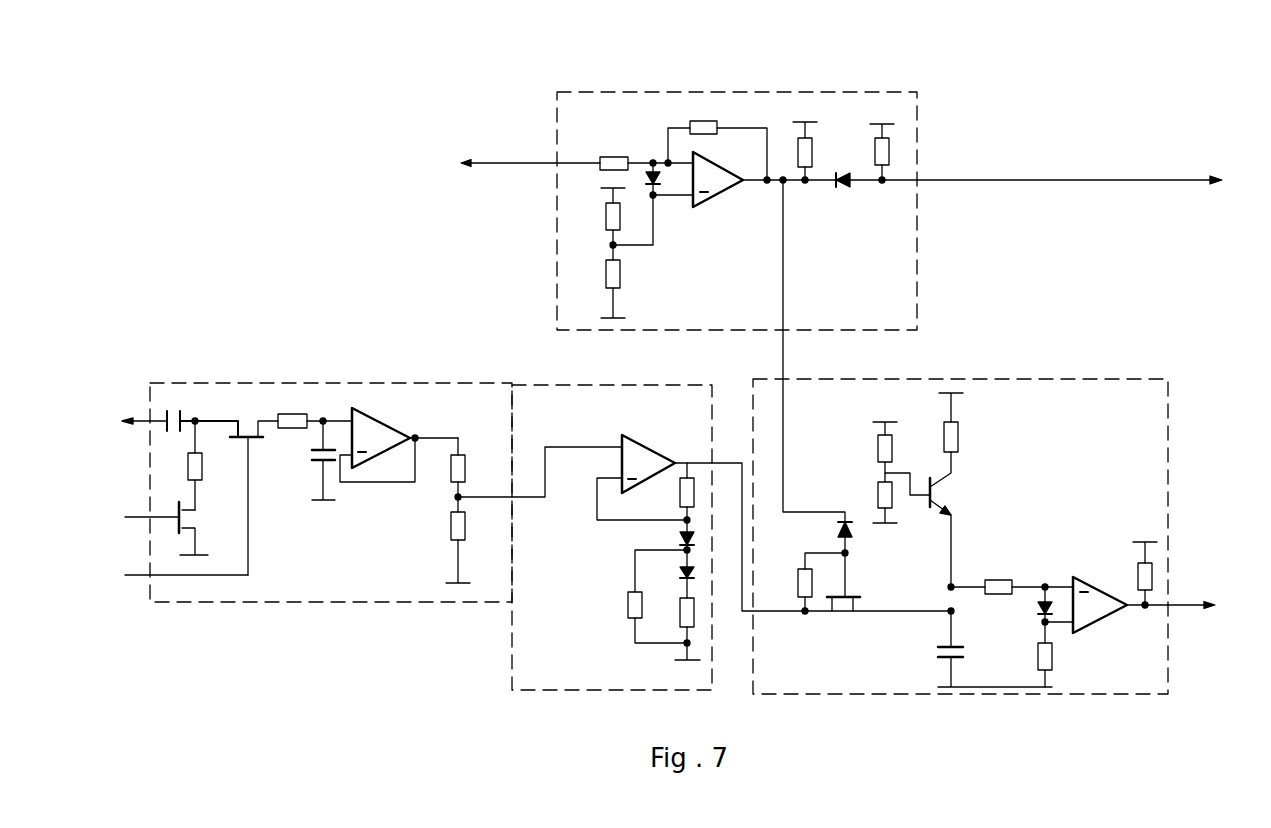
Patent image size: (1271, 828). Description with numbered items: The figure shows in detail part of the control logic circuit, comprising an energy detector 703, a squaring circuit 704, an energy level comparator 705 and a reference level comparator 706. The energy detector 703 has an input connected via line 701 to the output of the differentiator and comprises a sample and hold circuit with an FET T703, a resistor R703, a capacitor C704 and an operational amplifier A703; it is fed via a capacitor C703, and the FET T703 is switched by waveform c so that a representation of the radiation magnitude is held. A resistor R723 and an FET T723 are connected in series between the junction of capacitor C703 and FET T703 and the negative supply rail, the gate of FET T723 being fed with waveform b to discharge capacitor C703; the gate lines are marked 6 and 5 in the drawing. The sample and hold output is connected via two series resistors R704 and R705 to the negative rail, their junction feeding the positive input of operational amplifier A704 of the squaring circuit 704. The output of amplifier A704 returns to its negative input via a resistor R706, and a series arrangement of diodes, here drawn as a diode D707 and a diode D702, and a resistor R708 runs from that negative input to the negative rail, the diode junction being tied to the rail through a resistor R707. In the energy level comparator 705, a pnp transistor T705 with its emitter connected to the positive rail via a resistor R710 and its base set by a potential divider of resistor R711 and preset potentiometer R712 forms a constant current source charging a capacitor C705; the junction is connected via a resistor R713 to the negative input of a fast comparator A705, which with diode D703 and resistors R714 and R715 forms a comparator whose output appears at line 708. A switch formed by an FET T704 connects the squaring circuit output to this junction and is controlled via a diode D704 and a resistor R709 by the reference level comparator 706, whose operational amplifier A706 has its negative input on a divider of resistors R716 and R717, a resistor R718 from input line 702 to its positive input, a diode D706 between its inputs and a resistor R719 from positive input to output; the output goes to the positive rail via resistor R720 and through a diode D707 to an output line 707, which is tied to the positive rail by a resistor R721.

The line 701 is at (124, 419).
The input line 702 is at (510, 163).
The energy detector 703 is at (323, 382).
The squaring circuit 704 is at (578, 384).
The energy level comparator 705 is at (1030, 378).
The reference level comparator 706 is at (917, 157).
The output line 707 is at (1198, 166).
The output terminal 708 is at (1202, 623).
The terminal 5 is at (175, 573).
The terminal 6 is at (141, 518).
The capacitor C703 is at (175, 410).
The FET T703 is at (250, 432).
The resistor R703 is at (308, 406).
The capacitor C704 is at (310, 460).
The resistor R723 is at (185, 462).
The FET T723 is at (192, 512).
The operational amplifier A703 is at (399, 439).
The resistor R704 is at (455, 485).
The resistor R705 is at (455, 537).
The operational amplifier A704 is at (786, 513).
The resistor R706 is at (683, 495).
The diode D707 is at (683, 535).
The diode D702 is at (683, 570).
The resistor R707 is at (630, 600).
The resistor R708 is at (683, 615).
The resistor R718 is at (638, 149).
The resistor R719 is at (717, 136).
The operational amplifier A706 is at (957, 186).
The diode D706 is at (660, 176).
The resistor R716 is at (607, 216).
The resistor R717 is at (607, 275).
The resistor R720 is at (812, 158).
The resistor R721 is at (888, 152).
The diode D704 is at (850, 530).
The resistor R709 is at (800, 600).
The FET T704 is at (846, 600).
The resistor R711 is at (878, 447).
The preset potentiometer R712 is at (878, 487).
The pnp transistor T705 is at (969, 519).
The resistor R710 is at (984, 423).
The resistor R713 is at (1012, 572).
The diode D703 is at (1040, 604).
The resistor R714 is at (1080, 654).
The capacitor C705 is at (958, 660).
The fast comparator A705 is at (1144, 612).
The resistor R715 is at (1152, 577).